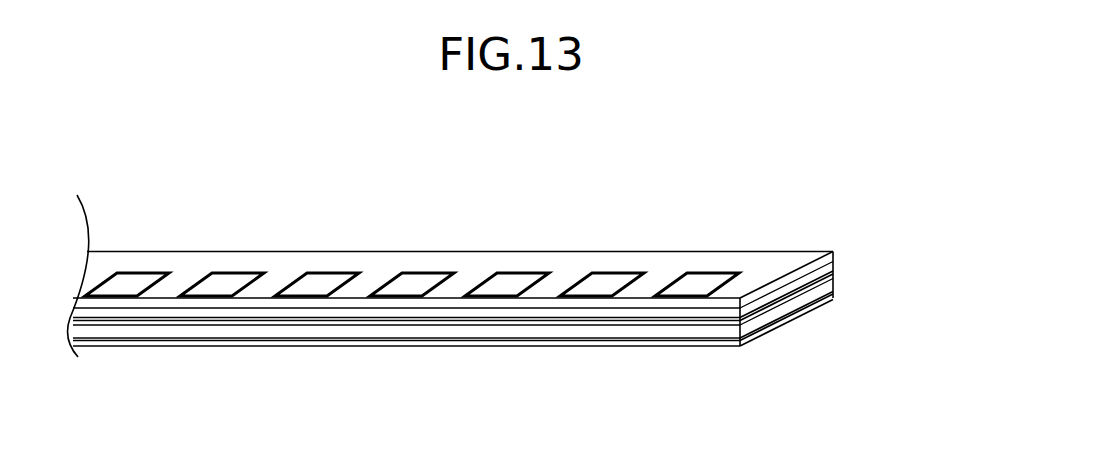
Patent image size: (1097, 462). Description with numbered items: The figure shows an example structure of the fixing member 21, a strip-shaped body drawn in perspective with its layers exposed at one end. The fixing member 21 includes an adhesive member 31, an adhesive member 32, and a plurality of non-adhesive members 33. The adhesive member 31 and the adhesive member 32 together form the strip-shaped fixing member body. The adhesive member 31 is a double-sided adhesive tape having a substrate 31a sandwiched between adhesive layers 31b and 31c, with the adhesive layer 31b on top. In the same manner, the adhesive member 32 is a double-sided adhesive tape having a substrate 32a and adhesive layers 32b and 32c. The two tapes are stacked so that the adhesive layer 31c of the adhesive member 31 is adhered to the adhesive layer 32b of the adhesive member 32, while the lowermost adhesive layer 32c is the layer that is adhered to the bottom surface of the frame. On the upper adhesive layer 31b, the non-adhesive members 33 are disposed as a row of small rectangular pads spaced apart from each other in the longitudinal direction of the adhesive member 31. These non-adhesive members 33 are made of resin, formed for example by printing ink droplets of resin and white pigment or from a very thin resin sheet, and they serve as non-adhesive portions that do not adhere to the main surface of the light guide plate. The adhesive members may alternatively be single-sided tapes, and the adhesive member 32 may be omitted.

The fixing member 21 is at (800, 166).
The adhesive member 31 is at (927, 197).
The substrate 31a is at (833, 260).
The adhesive layer 31b is at (833, 252).
The adhesive layer 31c is at (835, 270).
The adhesive member 32 is at (743, 380).
The substrate 32a is at (790, 308).
The adhesive layer 32b is at (768, 308).
The adhesive layer 32c is at (828, 303).
The non-adhesive members 33 is at (143, 272).